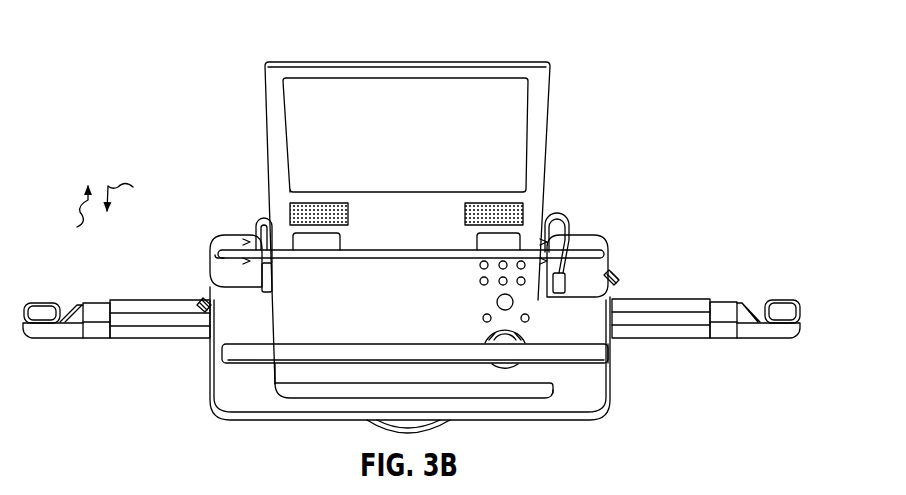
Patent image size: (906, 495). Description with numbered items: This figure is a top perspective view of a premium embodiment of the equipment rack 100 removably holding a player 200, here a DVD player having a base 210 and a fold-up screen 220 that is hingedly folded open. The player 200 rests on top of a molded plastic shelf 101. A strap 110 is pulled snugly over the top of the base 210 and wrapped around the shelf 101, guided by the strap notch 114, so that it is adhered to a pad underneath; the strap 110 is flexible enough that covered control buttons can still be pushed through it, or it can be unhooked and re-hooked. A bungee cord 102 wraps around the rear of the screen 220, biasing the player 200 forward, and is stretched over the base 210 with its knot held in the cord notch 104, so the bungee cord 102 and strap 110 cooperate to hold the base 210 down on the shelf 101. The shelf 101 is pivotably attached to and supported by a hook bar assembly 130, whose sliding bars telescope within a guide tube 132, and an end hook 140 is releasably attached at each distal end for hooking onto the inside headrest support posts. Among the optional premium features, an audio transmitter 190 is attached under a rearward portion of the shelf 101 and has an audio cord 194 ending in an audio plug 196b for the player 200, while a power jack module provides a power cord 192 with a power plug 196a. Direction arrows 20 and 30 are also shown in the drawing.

The first direction 20 is at (73, 216).
The second direction 30 is at (130, 195).
The equipment rack 100 is at (183, 402).
The shelf 101 is at (598, 396).
The bungee cord 102 is at (590, 234).
The cord notch 104 is at (601, 256).
The strap 110 is at (612, 340).
The strap notch 114 is at (612, 356).
The hook bar assembly 130 is at (678, 296).
The guide tube 132 is at (165, 300).
The end hook 140 is at (32, 302).
The audio transmitter 190 is at (458, 426).
The power cord 192 is at (264, 218).
The audio cord 194 is at (566, 210).
The power plug 196a is at (207, 258).
The audio plug 196b is at (612, 275).
The player 200 is at (296, 320).
The base 210 is at (411, 316).
The screen 220 is at (414, 58).